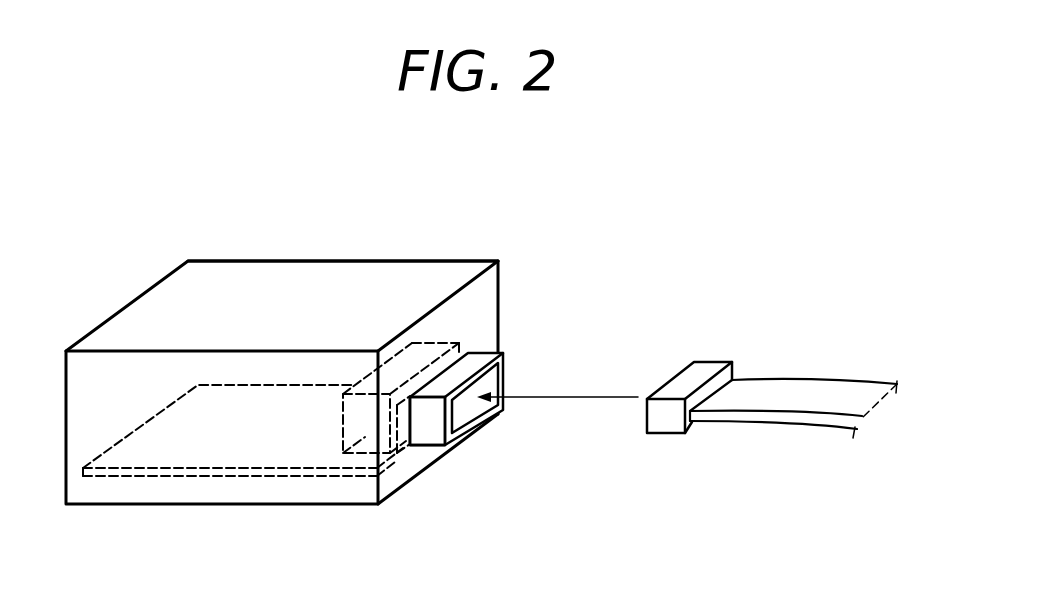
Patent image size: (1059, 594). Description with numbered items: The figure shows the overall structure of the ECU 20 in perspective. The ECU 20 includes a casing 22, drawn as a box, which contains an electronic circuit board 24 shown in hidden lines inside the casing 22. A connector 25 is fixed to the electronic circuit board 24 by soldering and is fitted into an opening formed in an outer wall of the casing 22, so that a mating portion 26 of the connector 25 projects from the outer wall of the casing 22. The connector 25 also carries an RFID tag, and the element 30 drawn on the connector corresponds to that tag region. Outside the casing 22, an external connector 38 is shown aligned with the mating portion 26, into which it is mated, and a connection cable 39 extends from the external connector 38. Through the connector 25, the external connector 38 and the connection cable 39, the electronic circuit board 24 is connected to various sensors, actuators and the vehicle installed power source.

The ECU 20 is at (431, 244).
The casing 22 is at (288, 260).
The electronic circuit board 24 is at (299, 473).
The connector 25 is at (485, 326).
The mating portion 26 is at (427, 437).
The connector 30 is at (474, 362).
The external connector 38 is at (668, 423).
The connection cable 39 is at (798, 386).